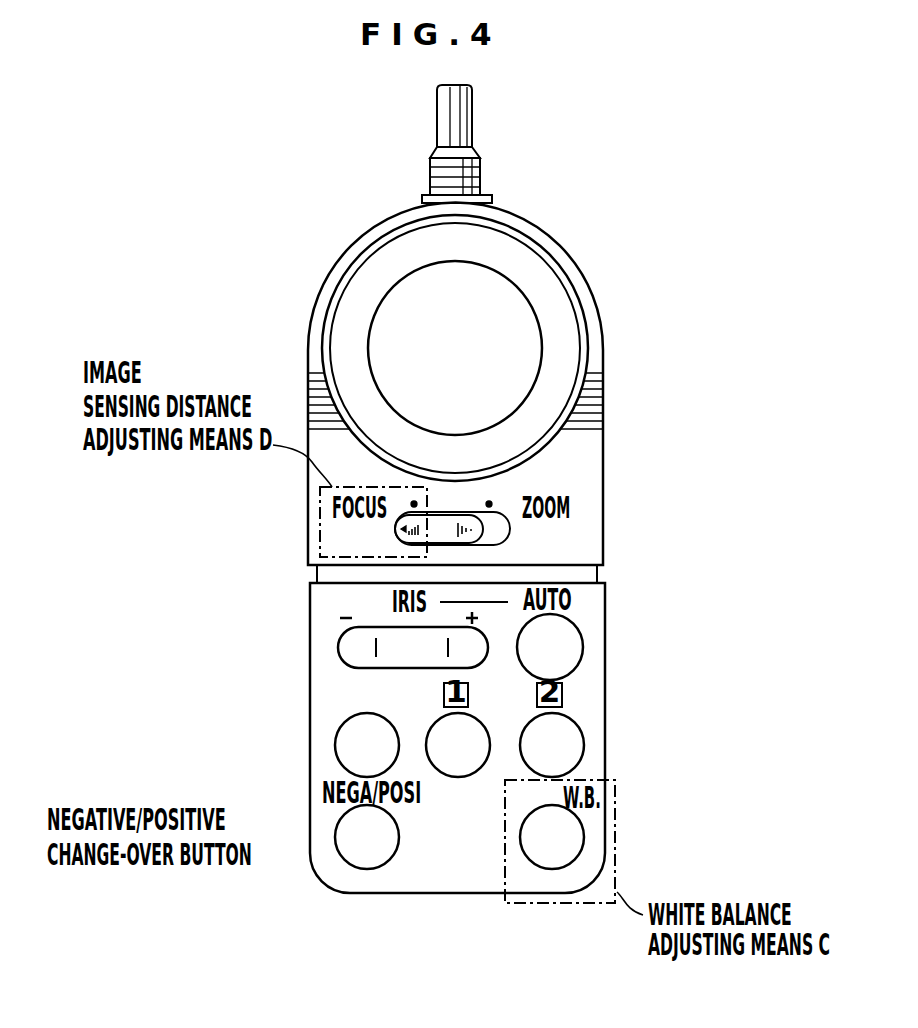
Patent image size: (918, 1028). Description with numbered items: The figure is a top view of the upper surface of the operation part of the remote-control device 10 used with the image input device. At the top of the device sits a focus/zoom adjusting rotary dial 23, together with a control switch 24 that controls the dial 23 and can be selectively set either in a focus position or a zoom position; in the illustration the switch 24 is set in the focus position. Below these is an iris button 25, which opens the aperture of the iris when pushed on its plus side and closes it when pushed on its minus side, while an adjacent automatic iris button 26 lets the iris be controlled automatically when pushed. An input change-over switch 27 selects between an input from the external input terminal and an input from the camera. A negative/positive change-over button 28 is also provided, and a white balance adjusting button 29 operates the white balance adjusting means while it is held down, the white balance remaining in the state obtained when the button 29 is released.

The remote-control device 10 is at (647, 404).
The focus/zoom adjusting rotary dial 23 is at (492, 297).
The control switch 24 is at (403, 527).
The iris button 25 is at (357, 648).
The automatic iris button 26 is at (563, 645).
The input change-over switch 27 is at (343, 743).
The negative/positive change-over button 28 is at (343, 845).
The white balance adjusting button 29 is at (570, 838).